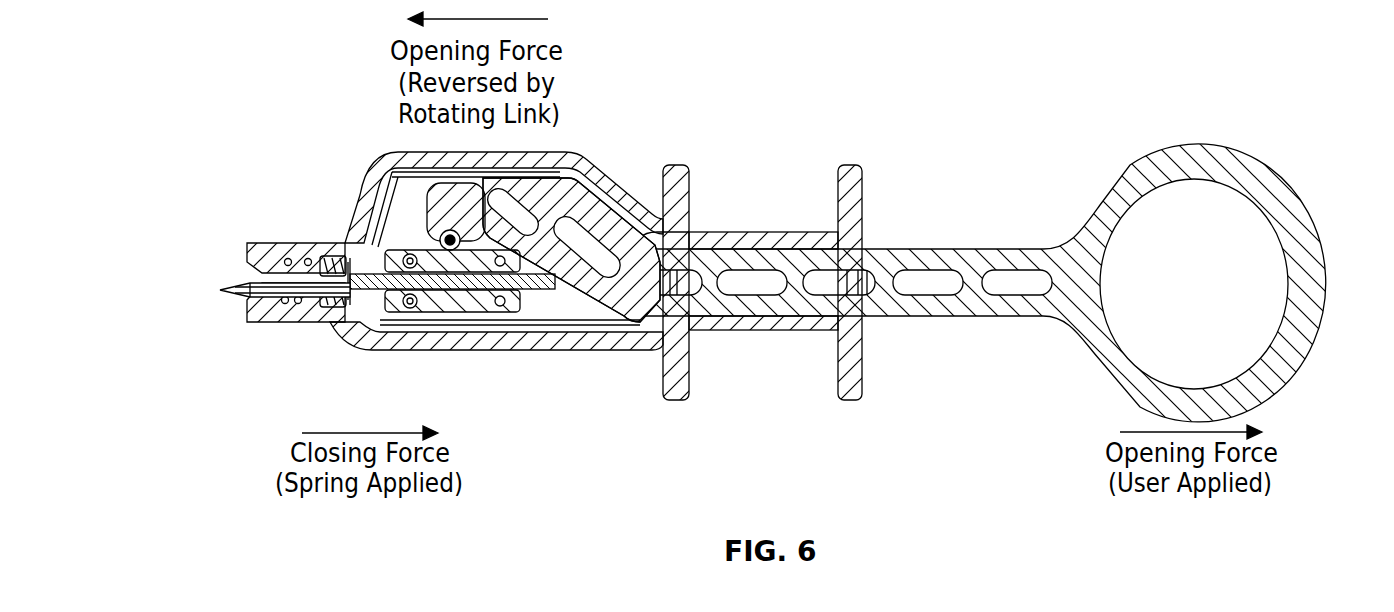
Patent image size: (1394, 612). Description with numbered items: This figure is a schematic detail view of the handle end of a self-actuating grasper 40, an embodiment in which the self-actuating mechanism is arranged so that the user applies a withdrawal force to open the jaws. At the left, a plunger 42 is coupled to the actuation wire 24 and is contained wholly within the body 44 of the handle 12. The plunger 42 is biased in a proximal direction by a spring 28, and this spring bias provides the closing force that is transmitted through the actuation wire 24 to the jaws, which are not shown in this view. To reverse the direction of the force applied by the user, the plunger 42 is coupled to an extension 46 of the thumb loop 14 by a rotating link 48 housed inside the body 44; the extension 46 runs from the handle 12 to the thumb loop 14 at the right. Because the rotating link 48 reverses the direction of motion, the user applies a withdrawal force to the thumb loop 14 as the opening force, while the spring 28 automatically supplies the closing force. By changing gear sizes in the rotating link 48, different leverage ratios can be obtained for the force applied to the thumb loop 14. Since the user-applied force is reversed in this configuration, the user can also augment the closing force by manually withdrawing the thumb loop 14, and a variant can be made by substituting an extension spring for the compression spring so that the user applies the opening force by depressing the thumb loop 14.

The grasper 40 is at (192, 50).
The handle 12 is at (760, 160).
The thumb loop 14 is at (1130, 172).
The actuation wire 24 is at (249, 300).
The spring 28 is at (332, 306).
The plunger 42 is at (430, 248).
The body 44 is at (581, 155).
The extension 46 is at (976, 277).
The rotating link 48 is at (393, 262).